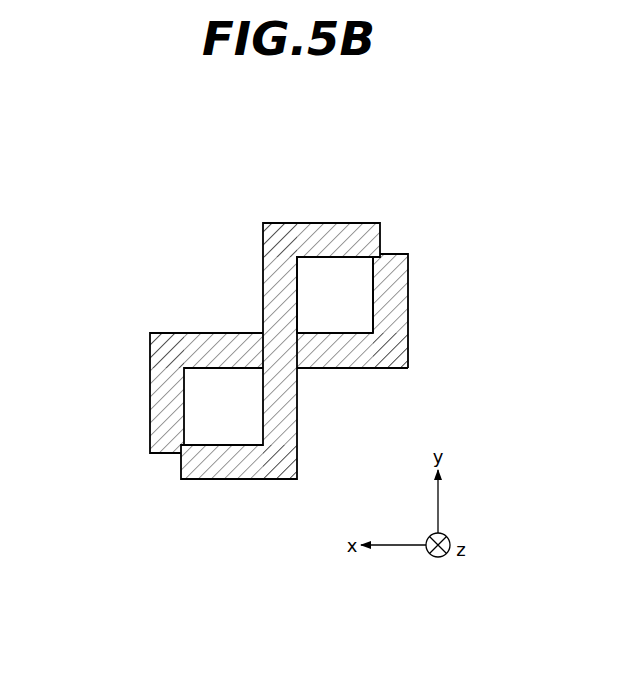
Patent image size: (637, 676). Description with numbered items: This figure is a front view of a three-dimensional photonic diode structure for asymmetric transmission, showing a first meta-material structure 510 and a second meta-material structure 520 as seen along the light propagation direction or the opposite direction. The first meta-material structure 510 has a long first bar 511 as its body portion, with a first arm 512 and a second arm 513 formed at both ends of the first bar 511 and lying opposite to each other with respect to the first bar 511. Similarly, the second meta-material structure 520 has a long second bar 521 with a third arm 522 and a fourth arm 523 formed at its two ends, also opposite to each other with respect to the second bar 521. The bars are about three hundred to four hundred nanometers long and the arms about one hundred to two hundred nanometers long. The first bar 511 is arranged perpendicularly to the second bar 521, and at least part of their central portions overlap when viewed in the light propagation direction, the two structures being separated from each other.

The first meta-material structure 510 is at (273, 347).
The first bar 511 is at (340, 357).
The first arm 512 is at (165, 405).
The second arm 513 is at (400, 287).
The second meta-material structure 520 is at (266, 349).
The second bar 521 is at (293, 290).
The third arm 522 is at (223, 467).
The fourth arm 523 is at (335, 232).